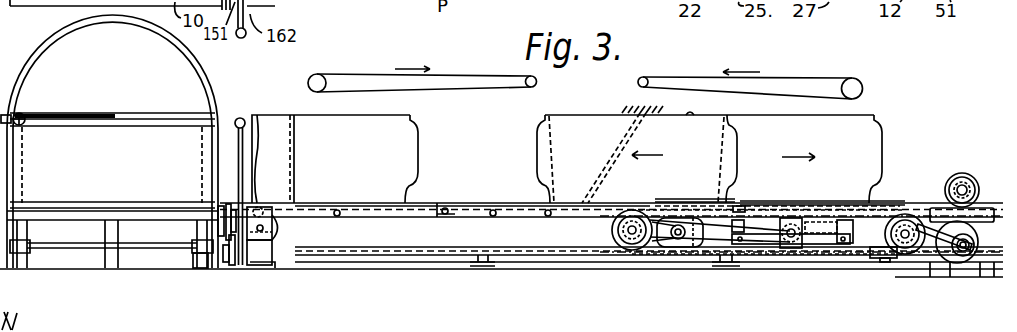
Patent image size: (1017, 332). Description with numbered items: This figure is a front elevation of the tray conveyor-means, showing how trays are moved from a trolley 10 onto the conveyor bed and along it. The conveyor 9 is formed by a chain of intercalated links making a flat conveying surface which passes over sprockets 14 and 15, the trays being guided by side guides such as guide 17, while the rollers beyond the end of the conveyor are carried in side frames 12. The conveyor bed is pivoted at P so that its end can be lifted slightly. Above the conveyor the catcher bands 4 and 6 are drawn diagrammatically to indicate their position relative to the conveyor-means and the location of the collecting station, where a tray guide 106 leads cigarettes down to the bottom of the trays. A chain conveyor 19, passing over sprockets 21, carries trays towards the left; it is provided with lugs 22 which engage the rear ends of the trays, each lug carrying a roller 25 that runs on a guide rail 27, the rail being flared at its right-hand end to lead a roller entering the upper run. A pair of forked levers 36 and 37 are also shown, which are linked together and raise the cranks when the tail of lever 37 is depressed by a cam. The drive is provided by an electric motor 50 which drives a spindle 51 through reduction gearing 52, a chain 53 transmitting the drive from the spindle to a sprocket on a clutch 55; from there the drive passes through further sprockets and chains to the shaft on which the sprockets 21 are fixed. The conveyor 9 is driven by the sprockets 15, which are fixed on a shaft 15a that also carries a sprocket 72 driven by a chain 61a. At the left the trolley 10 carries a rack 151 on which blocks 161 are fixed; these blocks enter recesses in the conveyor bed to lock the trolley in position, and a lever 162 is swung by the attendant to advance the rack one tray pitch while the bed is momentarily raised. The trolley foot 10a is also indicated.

The trolley 10 is at (218, 79).
The cart leg 10a is at (195, 262).
The rack 151 is at (227, 202).
The blocks 161 is at (227, 233).
The lever 162 is at (250, 212).
The sprocket 14 is at (287, 227).
The side guide 17 is at (505, 203).
The conveyor 9 is at (472, 208).
The side frames 12 is at (477, 215).
The pivot of conveyor bed P is at (445, 208).
The tray guide 106 is at (622, 128).
The catcher band 6 is at (458, 73).
The catcher band 4 is at (776, 77).
The sprockets 21 is at (615, 233).
The chain 61a is at (663, 237).
The sprockets 15 is at (693, 233).
The shaft 15a is at (678, 240).
The sprocket 72 is at (683, 213).
The forked lever 37 is at (765, 245).
The forked lever 36 is at (827, 245).
The lugs 22 is at (720, 208).
The roller 25 is at (742, 200).
The guide rail 27 is at (813, 207).
The chain conveyor 19 is at (882, 250).
The clutch 55 is at (932, 243).
The electric motor 50 is at (962, 180).
The reduction gearing 52 is at (969, 230).
The chain 53 is at (935, 253).
The spindle 51 is at (964, 248).